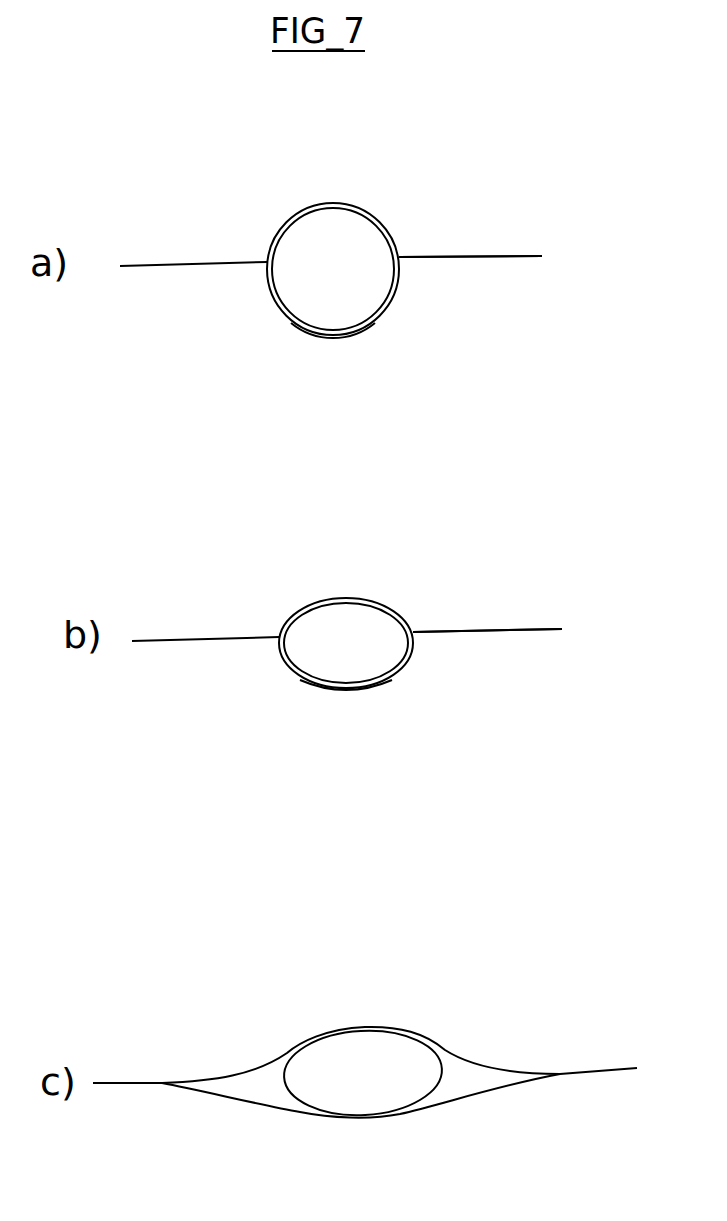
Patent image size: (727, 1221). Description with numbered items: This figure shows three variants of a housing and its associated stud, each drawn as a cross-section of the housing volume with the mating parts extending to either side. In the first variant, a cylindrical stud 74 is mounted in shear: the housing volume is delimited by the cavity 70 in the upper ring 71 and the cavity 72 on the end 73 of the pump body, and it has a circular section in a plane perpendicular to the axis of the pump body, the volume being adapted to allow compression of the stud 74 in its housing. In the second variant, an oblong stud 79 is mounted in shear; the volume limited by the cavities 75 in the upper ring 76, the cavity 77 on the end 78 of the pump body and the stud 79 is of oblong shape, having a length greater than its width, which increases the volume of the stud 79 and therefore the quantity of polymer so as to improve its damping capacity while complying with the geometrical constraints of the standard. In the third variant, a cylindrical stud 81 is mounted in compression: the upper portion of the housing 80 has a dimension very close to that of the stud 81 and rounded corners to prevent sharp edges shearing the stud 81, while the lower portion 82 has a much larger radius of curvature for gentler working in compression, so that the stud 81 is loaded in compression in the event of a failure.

In FIG. 7a, the cavity 70 is at (283, 222).
In FIG. 7a, the stud 74 is at (363, 247).
In FIG. 7a, the upper ring 71 is at (473, 240).
In FIG. 7a, the end of the pump body 73 is at (468, 282).
In FIG. 7a, the cavity 72 is at (358, 332).
In FIG. 7b, the cavities 75 is at (298, 608).
In FIG. 7b, the stud 79 is at (377, 622).
In FIG. 7b, the upper ring 76 is at (485, 608).
In FIG. 7b, the end of the pump body 78 is at (485, 655).
In FIG. 7b, the cavity 77 is at (367, 685).
In FIG. 7c, the housing 80 is at (342, 1027).
In FIG. 7c, the stud 81 is at (405, 1048).
In FIG. 7c, the lower portion 82 is at (363, 1114).